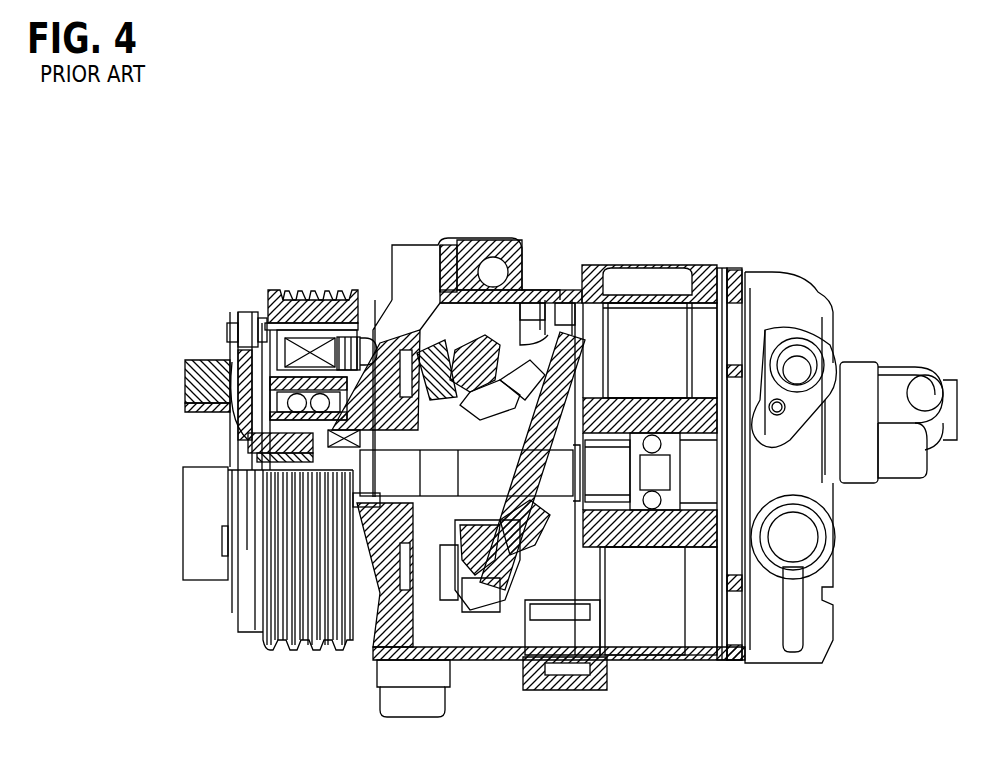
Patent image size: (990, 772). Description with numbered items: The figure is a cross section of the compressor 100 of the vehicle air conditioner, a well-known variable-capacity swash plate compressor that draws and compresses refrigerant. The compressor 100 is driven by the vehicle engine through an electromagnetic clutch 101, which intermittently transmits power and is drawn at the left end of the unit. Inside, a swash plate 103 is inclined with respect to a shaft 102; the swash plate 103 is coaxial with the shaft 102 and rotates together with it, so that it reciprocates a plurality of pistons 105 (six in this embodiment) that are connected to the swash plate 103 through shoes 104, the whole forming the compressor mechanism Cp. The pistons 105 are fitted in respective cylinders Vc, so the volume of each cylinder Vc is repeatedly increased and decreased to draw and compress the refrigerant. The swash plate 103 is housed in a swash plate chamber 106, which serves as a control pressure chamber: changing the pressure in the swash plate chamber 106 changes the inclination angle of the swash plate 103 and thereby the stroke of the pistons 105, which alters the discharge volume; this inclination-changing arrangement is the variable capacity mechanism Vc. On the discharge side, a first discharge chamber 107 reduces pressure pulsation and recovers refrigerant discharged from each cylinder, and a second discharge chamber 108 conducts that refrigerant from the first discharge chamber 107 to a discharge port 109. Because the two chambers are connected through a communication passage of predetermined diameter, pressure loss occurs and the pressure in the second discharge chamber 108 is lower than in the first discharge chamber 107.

The compressor 100 is at (604, 238).
The electromagnetic clutch 101 is at (263, 636).
The shaft 102 is at (388, 482).
The swash plate 103 is at (550, 327).
The shoes 104 is at (548, 330).
The pistons 105 is at (643, 330).
The swash plate chamber 106 is at (535, 520).
The first discharge chamber 107 is at (737, 320).
The second discharge chamber 108 is at (690, 262).
The discharge port 109 is at (657, 262).
The compressor mechanism Cp is at (483, 318).
The cylinders Vc is at (428, 335).